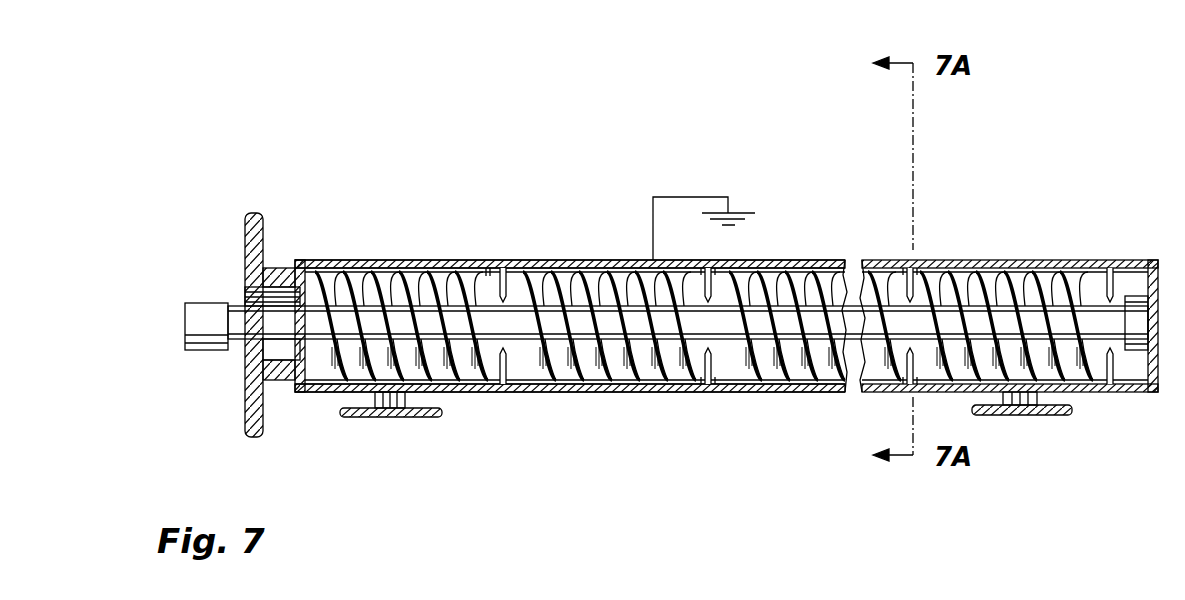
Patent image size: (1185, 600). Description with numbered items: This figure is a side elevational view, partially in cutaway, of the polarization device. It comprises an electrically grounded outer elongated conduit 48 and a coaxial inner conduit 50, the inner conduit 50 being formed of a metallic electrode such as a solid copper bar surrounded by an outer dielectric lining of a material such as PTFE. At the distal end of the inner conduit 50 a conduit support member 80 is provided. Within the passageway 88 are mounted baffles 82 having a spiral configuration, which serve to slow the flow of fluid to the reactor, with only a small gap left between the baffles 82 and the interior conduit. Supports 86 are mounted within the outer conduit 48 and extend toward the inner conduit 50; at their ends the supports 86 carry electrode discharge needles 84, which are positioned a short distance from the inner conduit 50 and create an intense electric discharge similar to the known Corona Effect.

The outer elongated conduit 48 is at (523, 260).
The inner coaxial conduit 50 is at (515, 334).
The conduit support member 80 is at (1134, 298).
The baffles 82 is at (1061, 270).
The electrode discharge needles 84 is at (899, 272).
The supports 86 is at (893, 272).
The passageway 88 is at (487, 283).